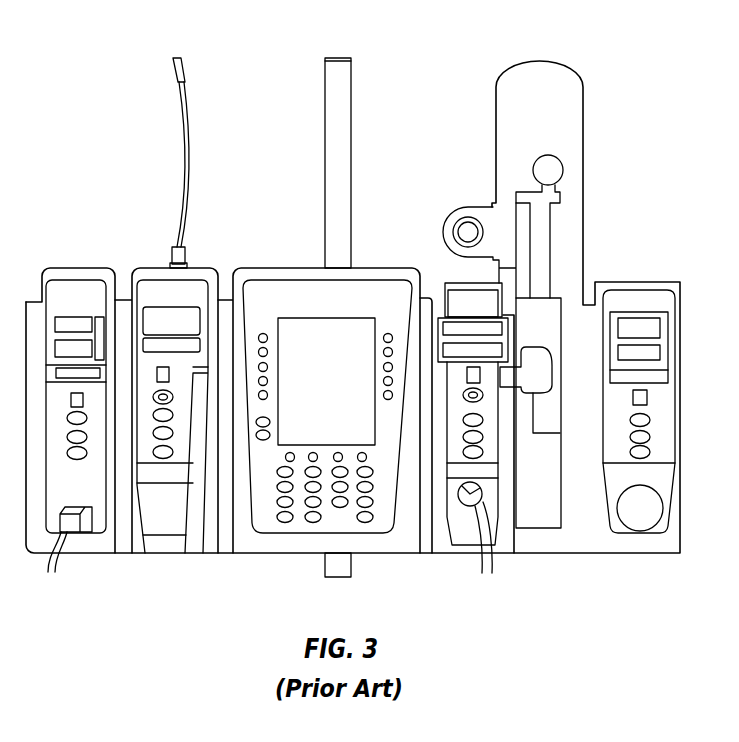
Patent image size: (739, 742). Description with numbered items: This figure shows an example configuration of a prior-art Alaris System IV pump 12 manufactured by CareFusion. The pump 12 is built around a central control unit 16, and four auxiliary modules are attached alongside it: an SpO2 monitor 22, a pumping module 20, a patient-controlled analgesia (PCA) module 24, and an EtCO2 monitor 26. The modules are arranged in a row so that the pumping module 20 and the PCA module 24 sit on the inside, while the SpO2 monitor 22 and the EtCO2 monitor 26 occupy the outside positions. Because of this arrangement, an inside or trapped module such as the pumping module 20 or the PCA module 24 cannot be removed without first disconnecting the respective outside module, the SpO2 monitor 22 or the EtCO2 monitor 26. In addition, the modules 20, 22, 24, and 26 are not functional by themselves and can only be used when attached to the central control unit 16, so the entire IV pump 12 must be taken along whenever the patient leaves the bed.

The IV pump 12 is at (285, 66).
The central control unit 16 is at (278, 268).
The pumping module 20 is at (155, 268).
The SpO2 monitor 22 is at (78, 268).
The patient-controlled analgesia (PCA) module 24 is at (455, 283).
The EtCO2 monitor 26 is at (647, 282).